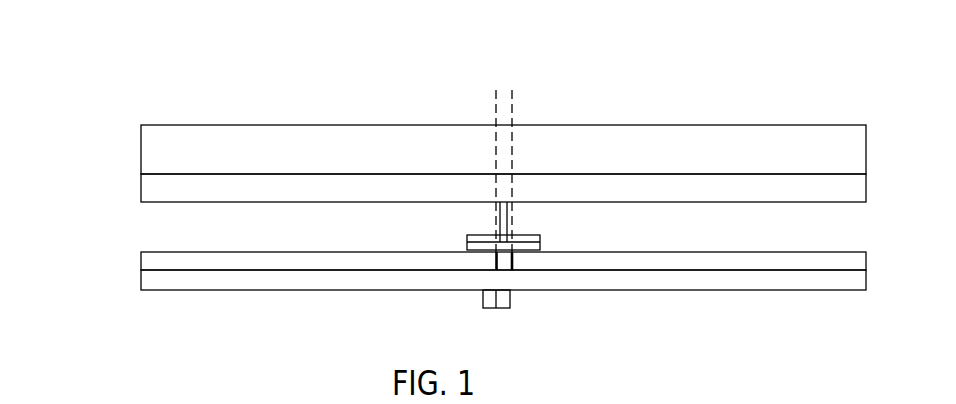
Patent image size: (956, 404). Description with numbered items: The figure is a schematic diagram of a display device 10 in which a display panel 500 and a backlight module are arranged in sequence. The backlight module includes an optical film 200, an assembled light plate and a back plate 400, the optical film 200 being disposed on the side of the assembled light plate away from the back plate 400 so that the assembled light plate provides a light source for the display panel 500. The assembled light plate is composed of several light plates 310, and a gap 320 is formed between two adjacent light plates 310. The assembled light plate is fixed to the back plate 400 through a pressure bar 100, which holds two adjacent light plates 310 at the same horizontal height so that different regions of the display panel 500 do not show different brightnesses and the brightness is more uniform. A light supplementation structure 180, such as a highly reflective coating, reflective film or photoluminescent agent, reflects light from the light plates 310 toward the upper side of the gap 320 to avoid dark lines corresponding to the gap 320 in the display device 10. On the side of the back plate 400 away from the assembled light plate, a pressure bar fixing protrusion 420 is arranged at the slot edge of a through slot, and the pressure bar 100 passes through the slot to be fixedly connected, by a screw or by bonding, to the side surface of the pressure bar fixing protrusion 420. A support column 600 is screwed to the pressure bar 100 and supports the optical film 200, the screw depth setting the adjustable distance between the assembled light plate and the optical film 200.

The display device 10 is at (247, 54).
The display panel 500 is at (194, 150).
The optical film 200 is at (194, 195).
The light plate 310 is at (195, 258).
The back plate 400 is at (195, 281).
The light supplementation structure 180 is at (477, 238).
The gap 320 is at (500, 107).
The support column 600 is at (503, 227).
The pressure bar 100 is at (503, 257).
The pressure bar fixing protrusion 420 is at (492, 301).